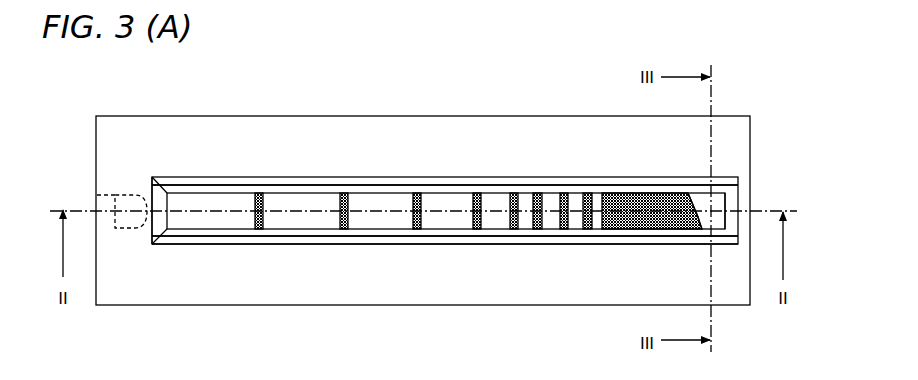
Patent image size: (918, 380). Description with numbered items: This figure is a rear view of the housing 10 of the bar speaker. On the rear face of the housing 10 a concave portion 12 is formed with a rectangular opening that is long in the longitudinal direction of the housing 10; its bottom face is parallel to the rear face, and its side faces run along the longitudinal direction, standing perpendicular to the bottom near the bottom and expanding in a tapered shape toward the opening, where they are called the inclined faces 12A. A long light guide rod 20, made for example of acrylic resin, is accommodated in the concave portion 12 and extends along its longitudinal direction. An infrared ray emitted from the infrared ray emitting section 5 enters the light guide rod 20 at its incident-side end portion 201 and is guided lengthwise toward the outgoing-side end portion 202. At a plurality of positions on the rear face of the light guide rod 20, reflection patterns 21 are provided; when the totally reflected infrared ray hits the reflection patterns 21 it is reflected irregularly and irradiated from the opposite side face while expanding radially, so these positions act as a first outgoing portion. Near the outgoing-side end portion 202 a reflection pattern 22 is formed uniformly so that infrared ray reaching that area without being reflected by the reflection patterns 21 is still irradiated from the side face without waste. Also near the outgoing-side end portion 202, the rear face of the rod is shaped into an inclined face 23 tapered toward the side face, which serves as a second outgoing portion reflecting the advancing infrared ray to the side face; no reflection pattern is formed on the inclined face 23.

The housing 10 is at (96, 116).
The infrared ray emitting section 5 is at (97, 195).
The light guide rod 20 is at (203, 190).
The incident-side end portion 201 is at (153, 180).
The outgoing-side end portion 202 is at (726, 218).
The concave portion 12 is at (733, 194).
The inclined faces 12A is at (163, 240).
The reflection patterns 21 is at (258, 193).
The reflection pattern 22 is at (648, 193).
The inclined face 23 is at (702, 227).